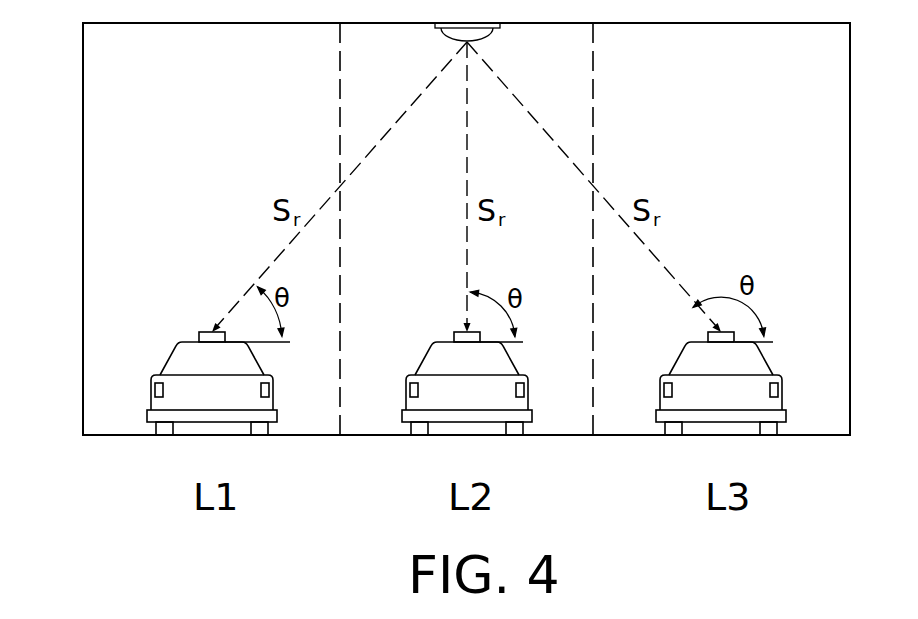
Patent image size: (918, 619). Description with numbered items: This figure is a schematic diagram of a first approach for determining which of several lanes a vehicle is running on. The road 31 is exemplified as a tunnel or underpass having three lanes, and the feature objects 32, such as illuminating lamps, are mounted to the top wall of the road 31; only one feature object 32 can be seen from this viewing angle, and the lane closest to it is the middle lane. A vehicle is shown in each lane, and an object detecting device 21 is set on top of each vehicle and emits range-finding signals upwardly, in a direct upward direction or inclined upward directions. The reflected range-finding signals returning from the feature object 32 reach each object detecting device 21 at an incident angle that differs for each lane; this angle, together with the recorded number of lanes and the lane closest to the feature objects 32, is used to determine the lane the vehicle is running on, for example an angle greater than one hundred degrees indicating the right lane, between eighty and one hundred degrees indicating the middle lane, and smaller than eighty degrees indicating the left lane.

The object detecting device 21 is at (215, 329).
The road 31 is at (125, 390).
The feature object 32 is at (489, 31).